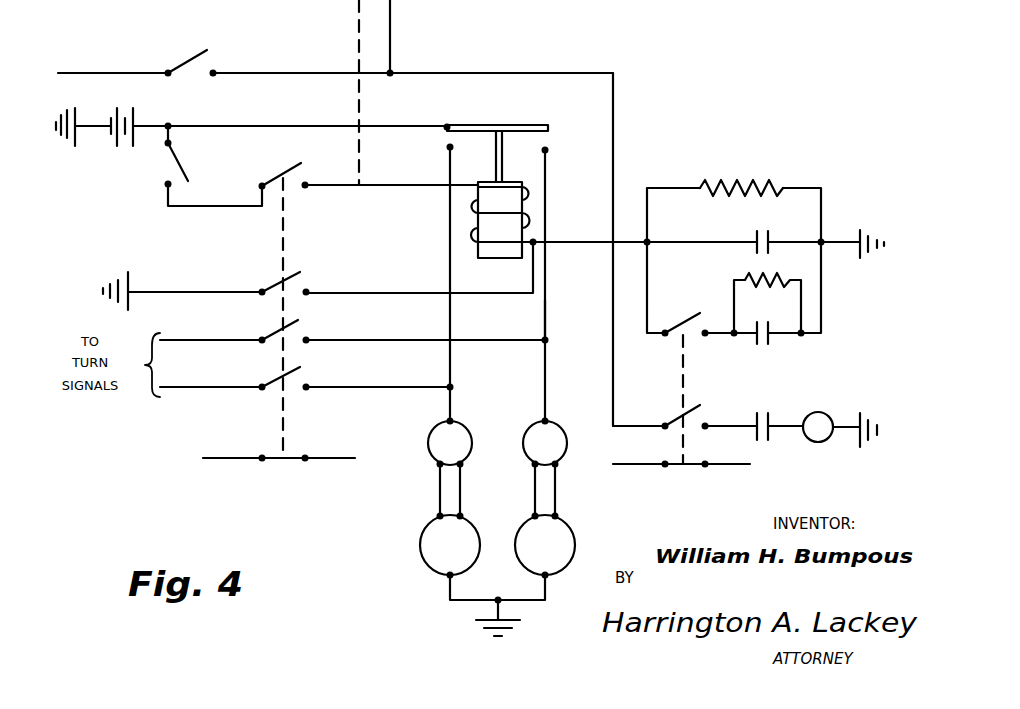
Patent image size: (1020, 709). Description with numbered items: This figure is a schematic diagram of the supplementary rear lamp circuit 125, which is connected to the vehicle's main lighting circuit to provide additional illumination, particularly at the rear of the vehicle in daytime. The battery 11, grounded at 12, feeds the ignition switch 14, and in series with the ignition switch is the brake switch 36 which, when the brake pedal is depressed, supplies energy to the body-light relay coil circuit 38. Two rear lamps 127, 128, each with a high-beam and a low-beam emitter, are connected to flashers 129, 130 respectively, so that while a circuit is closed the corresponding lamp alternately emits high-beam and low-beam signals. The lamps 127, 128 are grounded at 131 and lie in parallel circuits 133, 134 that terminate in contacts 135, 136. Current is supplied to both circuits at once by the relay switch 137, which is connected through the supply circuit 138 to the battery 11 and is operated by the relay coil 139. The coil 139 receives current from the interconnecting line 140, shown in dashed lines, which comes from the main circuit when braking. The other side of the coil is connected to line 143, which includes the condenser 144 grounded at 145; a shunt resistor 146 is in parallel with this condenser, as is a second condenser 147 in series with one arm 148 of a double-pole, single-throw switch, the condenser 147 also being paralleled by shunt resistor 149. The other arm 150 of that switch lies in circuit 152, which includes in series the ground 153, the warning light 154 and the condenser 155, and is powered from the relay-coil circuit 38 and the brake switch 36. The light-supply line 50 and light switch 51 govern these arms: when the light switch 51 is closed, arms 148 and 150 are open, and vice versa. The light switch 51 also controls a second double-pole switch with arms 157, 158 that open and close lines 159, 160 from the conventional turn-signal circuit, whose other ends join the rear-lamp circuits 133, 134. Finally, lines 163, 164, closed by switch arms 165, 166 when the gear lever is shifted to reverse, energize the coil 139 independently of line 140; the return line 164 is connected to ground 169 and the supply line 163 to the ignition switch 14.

The battery 11 is at (115, 148).
The ground 12 is at (58, 134).
The ignition switch 14 is at (184, 161).
The brake switch 36 is at (188, 56).
The body-light relay coil circuit 38 is at (298, 73).
The light-supply line 50 is at (210, 460).
The light switch 51 is at (287, 460).
The supplementary rear lamp circuit 125 is at (659, 120).
The rear lamp 127 is at (420, 548).
The rear lamp 128 is at (518, 531).
The flasher 129 is at (428, 441).
The flasher 130 is at (523, 452).
The ground 131 is at (495, 636).
The rear-lamp circuit 133 is at (448, 273).
The rear-lamp circuit 134 is at (549, 298).
The contact 135 is at (447, 148).
The contact 136 is at (549, 151).
The relay switch 137 is at (527, 124).
The supply circuit 138 is at (272, 125).
The relay coil 139 is at (534, 223).
The interconnecting line 140 is at (356, 33).
The line 143 is at (374, 189).
The condenser 144 is at (756, 233).
The ground 145 is at (860, 232).
The shunt resistor 146 is at (718, 180).
The condenser 147 is at (770, 340).
The switch arm 148 is at (690, 318).
The shunt resistor 149 is at (750, 278).
The switch arm 150 is at (695, 405).
The circuit 152 is at (607, 72).
The ground 153 is at (877, 420).
The warning light 154 is at (834, 403).
The condenser 155 is at (769, 414).
The switch arm 157 is at (296, 323).
The switch arm 158 is at (300, 369).
The line 159 is at (215, 328).
The line 160 is at (216, 373).
The supply line 163 is at (196, 208).
The return line 164 is at (205, 277).
The switch arm 165 is at (268, 173).
The switch arm 166 is at (292, 270).
The ground 169 is at (138, 271).